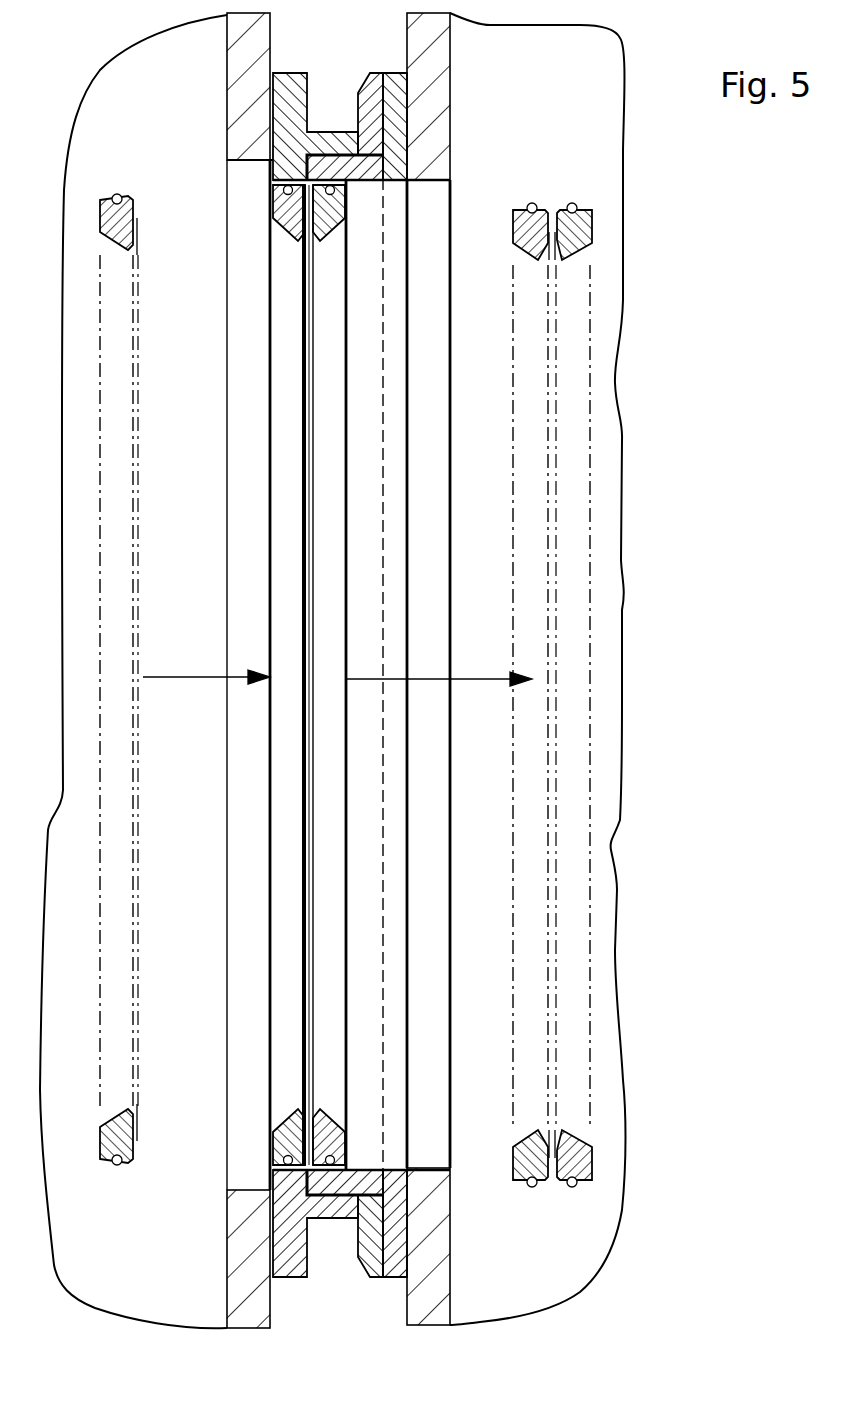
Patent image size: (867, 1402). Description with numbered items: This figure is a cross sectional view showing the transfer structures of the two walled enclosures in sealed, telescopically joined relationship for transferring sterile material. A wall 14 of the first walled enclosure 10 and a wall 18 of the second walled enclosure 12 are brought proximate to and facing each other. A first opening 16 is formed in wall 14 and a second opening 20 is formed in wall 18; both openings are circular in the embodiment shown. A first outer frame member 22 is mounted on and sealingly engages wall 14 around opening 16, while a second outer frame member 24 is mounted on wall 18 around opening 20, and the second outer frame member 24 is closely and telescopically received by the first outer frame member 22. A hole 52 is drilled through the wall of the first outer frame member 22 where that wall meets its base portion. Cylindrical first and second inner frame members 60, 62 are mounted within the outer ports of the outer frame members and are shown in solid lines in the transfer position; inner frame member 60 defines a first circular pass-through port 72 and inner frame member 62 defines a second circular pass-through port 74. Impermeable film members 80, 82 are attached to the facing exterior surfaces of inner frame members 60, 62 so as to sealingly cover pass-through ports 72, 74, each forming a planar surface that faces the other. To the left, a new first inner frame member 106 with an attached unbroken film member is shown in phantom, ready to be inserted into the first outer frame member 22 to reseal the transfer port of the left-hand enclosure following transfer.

The first walled enclosure 10 is at (149, 122).
The second walled enclosure 12 is at (544, 84).
The wall 14 is at (227, 110).
The first opening 16 is at (227, 193).
The wall 18 is at (450, 142).
The second opening 20 is at (450, 310).
The first outer frame member 22 is at (288, 73).
The second outer frame member 24 is at (387, 73).
The hole 52 is at (310, 1212).
The first inner frame member 60 is at (272, 215).
The second inner frame member 62 is at (345, 205).
The first pass-through port 72 is at (270, 525).
The second pass-through port 74 is at (346, 455).
The impermeable film member 80 is at (302, 370).
The impermeable film member 82 is at (313, 360).
The new inner frame member 106 is at (100, 210).